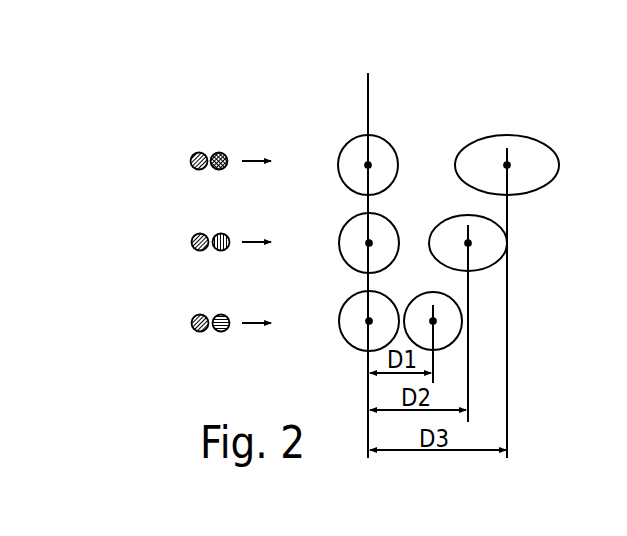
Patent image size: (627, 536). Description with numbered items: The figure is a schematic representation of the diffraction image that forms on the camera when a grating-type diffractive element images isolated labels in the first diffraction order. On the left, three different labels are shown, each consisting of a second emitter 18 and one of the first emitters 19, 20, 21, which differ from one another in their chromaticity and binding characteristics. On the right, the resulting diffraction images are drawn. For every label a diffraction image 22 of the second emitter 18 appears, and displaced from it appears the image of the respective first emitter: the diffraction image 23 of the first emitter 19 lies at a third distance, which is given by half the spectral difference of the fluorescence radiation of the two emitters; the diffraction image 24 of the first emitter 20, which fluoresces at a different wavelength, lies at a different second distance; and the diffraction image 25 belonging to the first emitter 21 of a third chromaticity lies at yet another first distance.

The second emitter 18 is at (190, 161).
The first emitter 19 is at (222, 152).
The first emitter 20 is at (219, 233).
The first emitter 21 is at (219, 314).
The diffraction image 22 is at (383, 136).
The diffraction image 23 is at (528, 133).
The diffraction image 24 is at (483, 214).
The diffraction image 25 is at (453, 298).